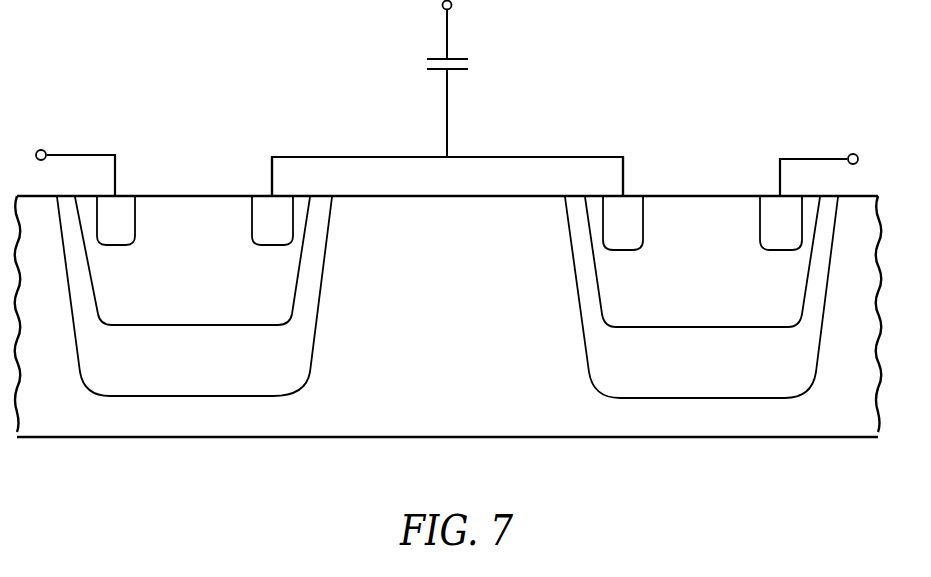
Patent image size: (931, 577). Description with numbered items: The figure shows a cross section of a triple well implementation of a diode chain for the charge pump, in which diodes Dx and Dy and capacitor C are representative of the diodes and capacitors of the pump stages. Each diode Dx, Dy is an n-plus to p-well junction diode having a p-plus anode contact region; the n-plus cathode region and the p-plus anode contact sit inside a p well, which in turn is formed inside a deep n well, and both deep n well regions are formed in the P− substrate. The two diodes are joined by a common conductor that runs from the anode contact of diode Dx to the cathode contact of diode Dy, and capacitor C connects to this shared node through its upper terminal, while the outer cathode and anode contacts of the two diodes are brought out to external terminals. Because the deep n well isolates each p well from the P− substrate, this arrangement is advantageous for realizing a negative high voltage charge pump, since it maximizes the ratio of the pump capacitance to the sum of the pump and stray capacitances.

The capacitor C is at (447, 99).
The diode Dx is at (213, 170).
The diode Dy is at (677, 168).
The P− substrate is at (448, 316).